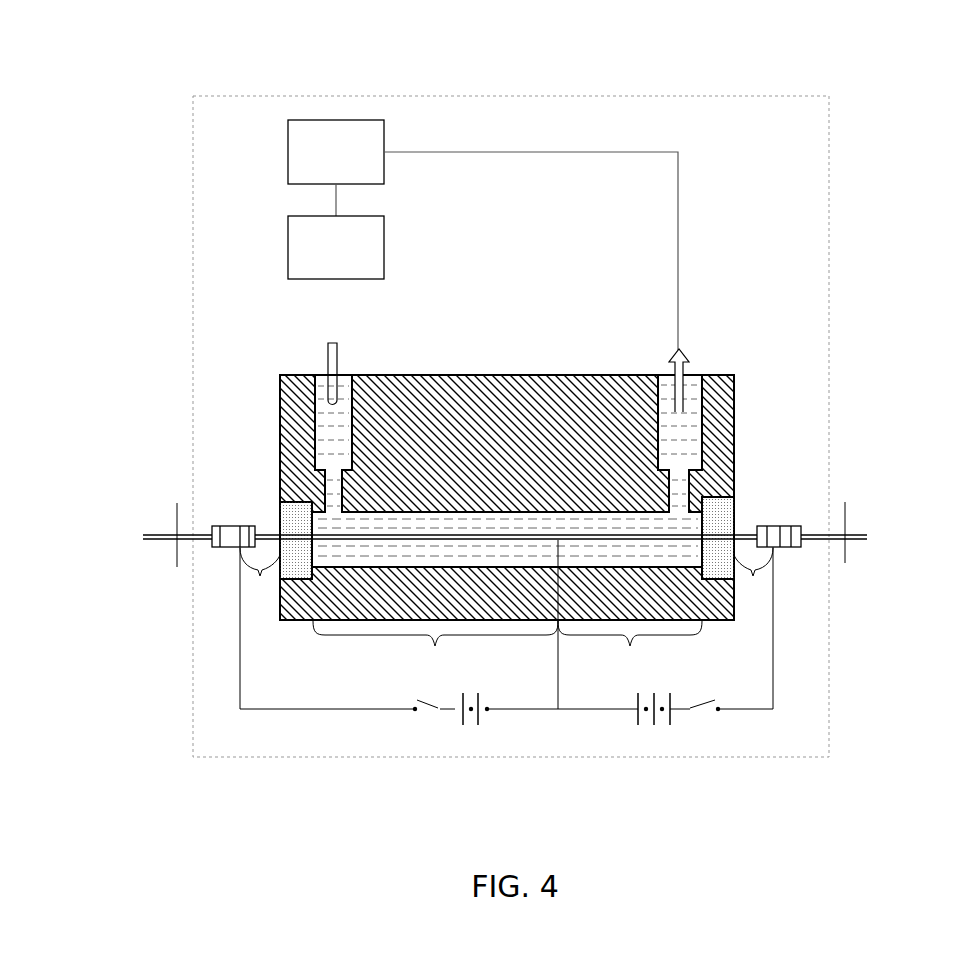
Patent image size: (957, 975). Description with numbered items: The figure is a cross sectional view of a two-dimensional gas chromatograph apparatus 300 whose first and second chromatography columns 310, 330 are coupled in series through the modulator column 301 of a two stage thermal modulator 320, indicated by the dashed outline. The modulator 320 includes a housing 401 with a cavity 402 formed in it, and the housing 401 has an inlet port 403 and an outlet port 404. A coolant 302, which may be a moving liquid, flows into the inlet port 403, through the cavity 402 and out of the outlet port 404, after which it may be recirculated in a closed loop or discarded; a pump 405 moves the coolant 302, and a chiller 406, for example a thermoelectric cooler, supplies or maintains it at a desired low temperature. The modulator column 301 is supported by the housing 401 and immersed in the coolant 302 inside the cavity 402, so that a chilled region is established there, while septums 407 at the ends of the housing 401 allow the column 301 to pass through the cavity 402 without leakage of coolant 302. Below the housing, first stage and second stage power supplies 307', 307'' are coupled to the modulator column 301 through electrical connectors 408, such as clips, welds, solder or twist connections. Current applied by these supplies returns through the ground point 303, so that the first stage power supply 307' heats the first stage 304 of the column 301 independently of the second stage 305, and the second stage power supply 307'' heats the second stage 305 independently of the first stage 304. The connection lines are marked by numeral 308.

The 2D GC apparatus 300 is at (854, 340).
The modulator column 301 is at (263, 526).
The coolant 302 is at (328, 437).
The ground point 303 is at (559, 534).
The first stage 304 is at (435, 646).
The second stage 305 is at (630, 646).
The first stage power supply 307' is at (470, 763).
The second stage power supply 307'' is at (679, 757).
The electrical connection 308 is at (259, 582).
The first chromatography column 310 is at (156, 526).
The two stage thermal modulator 320 is at (688, 94).
The second chromatography column 330 is at (861, 527).
The housing 401 is at (503, 373).
The cavity 402 is at (380, 555).
The inlet port 403 is at (345, 373).
The outlet port 404 is at (667, 372).
The pump 405 is at (336, 247).
The chiller 406 is at (483, 235).
The septums 407 is at (275, 514).
The electrical connectors 408 is at (240, 522).